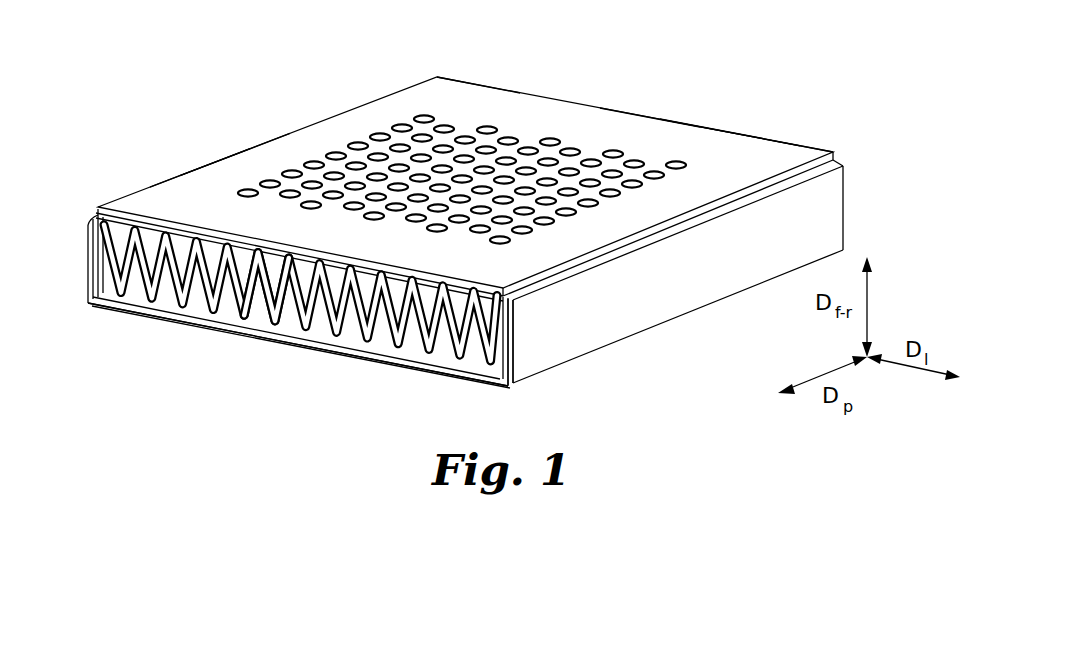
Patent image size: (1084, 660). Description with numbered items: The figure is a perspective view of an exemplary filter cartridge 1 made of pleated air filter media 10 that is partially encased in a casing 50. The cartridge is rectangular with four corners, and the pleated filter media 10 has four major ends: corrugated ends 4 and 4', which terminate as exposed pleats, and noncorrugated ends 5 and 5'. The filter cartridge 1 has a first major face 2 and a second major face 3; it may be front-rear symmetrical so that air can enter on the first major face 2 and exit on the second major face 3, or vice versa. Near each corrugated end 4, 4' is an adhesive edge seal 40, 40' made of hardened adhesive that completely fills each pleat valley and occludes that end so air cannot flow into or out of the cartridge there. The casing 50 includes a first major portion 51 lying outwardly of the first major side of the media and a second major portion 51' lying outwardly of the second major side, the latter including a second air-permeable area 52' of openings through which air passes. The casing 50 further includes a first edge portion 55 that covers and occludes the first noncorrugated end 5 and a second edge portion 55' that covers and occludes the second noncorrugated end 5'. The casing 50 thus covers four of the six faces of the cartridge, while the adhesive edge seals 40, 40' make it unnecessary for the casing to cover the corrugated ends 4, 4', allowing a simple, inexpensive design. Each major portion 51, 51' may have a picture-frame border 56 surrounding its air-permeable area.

The filter cartridge 1 is at (778, 38).
The first major face 2 is at (190, 369).
The second major face 3 is at (550, 78).
The corrugated end 4 is at (300, 296).
The corrugated end 4' is at (478, 56).
The noncorrugated end 5 is at (72, 256).
The noncorrugated end 5' is at (527, 362).
The pleated air filter media 10 is at (455, 366).
The first adhesive edge seal 40 is at (269, 324).
The second adhesive edge seal 40' is at (650, 92).
The casing 50 is at (178, 193).
The first major portion 51 is at (301, 365).
The second major portion 51' is at (710, 102).
The second air-permeable area 52' is at (462, 148).
The first edge portion 55 is at (235, 137).
The second edge portion 55' is at (678, 271).
The picture-frame border 56 is at (777, 152).